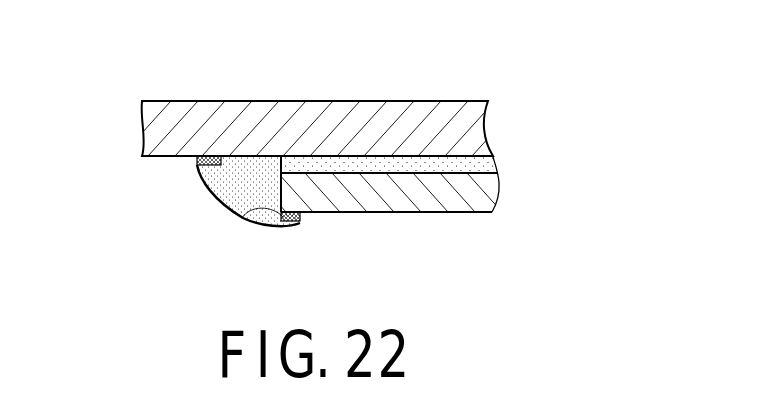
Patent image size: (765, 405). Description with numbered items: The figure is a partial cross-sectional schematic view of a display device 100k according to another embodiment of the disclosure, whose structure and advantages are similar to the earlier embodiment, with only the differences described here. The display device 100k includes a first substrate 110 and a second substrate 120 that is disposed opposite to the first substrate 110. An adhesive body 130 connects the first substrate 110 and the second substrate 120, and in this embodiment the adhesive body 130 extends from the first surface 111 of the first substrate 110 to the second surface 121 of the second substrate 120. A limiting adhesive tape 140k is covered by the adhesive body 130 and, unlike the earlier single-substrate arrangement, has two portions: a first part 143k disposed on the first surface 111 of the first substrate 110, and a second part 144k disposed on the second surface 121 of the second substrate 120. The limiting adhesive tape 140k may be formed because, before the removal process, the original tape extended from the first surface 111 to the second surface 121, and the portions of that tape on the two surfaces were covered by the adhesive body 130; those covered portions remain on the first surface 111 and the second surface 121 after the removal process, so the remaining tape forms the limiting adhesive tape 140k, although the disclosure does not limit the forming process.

The display device 100k is at (98, 67).
The second substrate 120 is at (467, 127).
The second surface 121 is at (168, 164).
The first substrate 110 is at (483, 188).
The first surface 111 is at (450, 214).
The adhesive body 130 is at (263, 216).
The limiting adhesive tape 140k is at (122, 200).
The second part 144k is at (203, 166).
The first part 143k is at (242, 218).